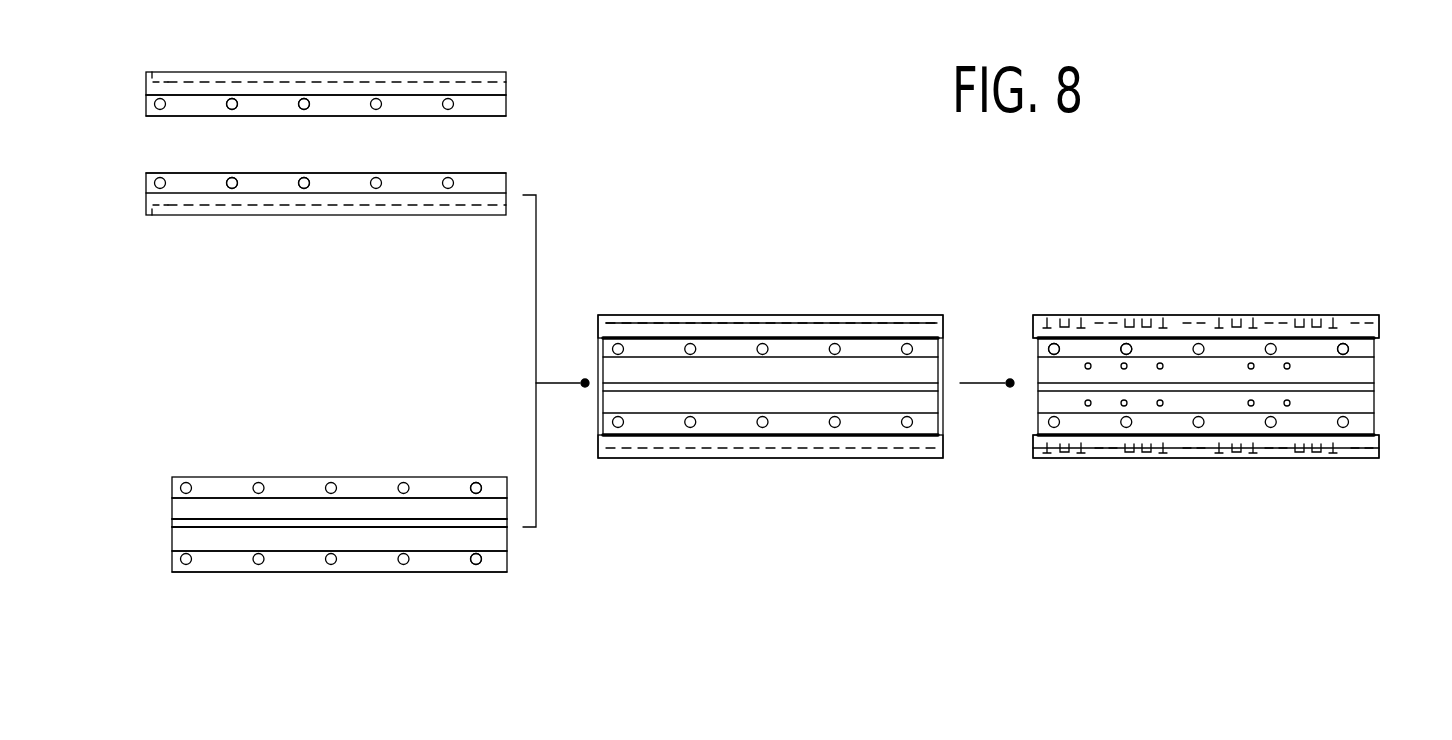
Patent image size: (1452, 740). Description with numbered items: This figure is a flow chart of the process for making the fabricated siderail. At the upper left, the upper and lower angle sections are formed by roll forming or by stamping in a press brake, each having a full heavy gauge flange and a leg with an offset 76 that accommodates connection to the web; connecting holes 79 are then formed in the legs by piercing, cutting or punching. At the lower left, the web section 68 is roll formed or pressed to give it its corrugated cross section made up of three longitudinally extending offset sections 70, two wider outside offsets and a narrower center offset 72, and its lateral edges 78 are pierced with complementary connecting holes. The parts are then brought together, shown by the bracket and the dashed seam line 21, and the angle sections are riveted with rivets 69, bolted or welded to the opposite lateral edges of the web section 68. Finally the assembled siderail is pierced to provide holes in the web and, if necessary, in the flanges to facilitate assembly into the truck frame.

The dashed seam line 21 is at (640, 322).
The intermediate connecting web section 68 is at (278, 474).
The rivets 69 is at (1127, 343).
The offset sections 70 is at (1348, 349).
The center offset 72 is at (370, 518).
The offset 76 is at (424, 108).
The lateral edge 78 is at (228, 572).
The connecting holes 79 is at (305, 110).